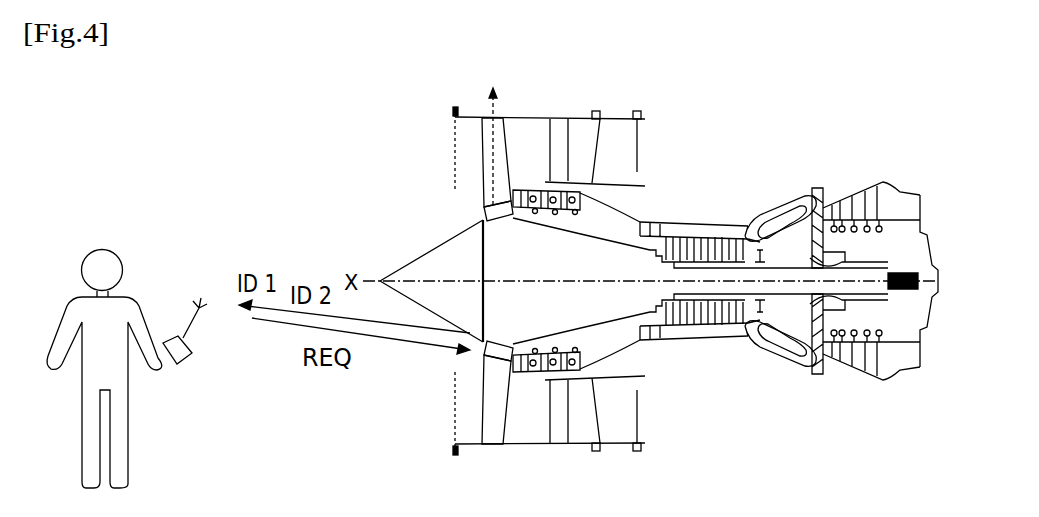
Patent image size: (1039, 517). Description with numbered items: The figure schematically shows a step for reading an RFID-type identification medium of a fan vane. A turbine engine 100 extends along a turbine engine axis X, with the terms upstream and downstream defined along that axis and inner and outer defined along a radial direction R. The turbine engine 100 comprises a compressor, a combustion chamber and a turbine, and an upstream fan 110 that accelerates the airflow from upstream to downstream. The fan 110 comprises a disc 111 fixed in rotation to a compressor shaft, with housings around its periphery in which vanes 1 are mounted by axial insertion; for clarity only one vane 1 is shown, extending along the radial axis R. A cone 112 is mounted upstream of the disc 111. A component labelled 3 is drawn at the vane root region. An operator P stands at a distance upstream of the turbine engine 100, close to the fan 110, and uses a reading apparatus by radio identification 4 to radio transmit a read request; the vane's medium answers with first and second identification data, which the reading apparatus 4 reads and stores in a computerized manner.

The vane 1 is at (492, 147).
The blade root / hub stage 3 is at (512, 217).
The reading apparatus by radio identification 4 is at (188, 363).
The turbine engine 100 is at (621, 259).
The fan 110 is at (475, 259).
The disc 111 is at (488, 240).
The cone 112 is at (418, 258).
The operator P is at (122, 264).